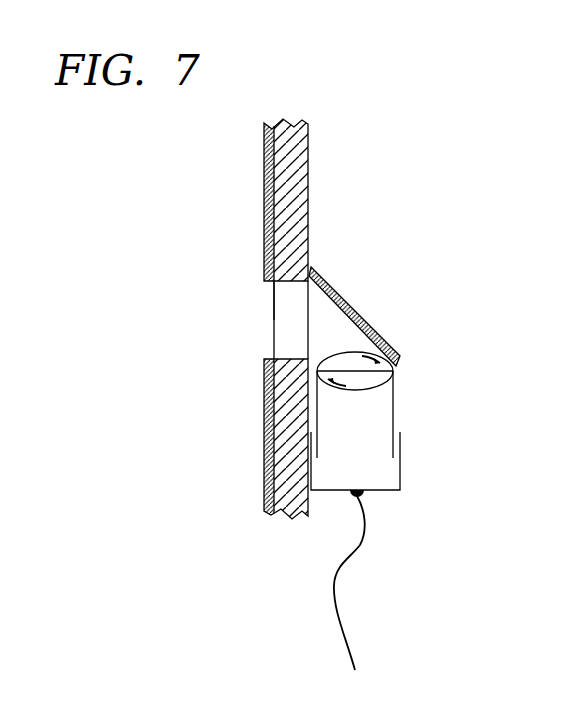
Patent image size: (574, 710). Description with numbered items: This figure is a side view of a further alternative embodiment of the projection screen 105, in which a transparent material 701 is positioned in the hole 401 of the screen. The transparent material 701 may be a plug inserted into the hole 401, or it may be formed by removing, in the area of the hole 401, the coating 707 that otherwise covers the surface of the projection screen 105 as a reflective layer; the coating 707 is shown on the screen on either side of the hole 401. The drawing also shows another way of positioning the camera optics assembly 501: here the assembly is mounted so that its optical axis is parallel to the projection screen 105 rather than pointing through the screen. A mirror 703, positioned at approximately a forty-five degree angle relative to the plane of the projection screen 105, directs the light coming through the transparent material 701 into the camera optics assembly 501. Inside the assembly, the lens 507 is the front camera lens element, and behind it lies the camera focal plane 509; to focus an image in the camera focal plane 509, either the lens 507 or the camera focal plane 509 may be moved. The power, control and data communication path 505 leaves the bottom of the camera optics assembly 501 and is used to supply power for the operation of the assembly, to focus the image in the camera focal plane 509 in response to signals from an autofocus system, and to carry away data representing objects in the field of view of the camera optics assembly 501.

The projection screen 105 is at (308, 139).
The coating layer 707 is at (264, 189).
The transparent material 701 is at (274, 297).
The hole 401 is at (265, 343).
The mirror 703 is at (335, 292).
The lens 507 is at (356, 358).
The camera optics assembly 501 is at (396, 394).
The camera focal plane 509 is at (344, 490).
The power, control and data communication path 505 is at (336, 600).